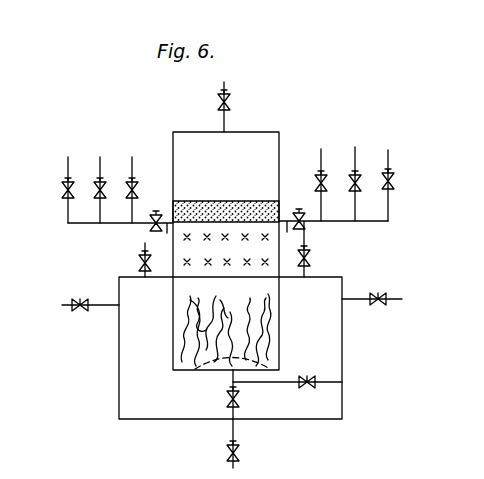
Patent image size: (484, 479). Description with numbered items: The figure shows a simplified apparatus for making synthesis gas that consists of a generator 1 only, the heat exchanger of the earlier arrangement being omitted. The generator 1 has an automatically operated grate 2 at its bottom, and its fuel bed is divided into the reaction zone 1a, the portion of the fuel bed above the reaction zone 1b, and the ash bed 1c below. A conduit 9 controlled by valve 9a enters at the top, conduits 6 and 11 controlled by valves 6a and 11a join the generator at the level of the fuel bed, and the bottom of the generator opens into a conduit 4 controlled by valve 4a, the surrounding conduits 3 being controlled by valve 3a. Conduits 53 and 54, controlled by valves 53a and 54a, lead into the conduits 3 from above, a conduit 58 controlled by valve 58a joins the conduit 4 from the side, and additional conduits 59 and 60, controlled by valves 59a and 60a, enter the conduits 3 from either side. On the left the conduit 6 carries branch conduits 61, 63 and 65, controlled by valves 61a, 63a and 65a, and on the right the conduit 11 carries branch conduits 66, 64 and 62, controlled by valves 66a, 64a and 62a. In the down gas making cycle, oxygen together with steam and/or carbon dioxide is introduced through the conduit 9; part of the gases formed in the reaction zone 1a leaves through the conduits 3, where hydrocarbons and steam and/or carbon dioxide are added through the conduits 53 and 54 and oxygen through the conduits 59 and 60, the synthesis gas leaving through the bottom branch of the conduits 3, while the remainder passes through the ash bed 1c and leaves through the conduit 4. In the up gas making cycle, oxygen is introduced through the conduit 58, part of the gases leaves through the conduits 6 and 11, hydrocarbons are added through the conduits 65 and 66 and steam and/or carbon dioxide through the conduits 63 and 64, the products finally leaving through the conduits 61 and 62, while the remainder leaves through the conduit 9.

The generator 1 is at (226, 251).
The reaction zone 1a is at (185, 263).
The portion of the fuel bed above the reaction zone 1b is at (250, 210).
The ash bed 1c is at (203, 330).
The automatically operated grate 2 is at (215, 361).
The conduit 3 is at (119, 372).
The valve 3a is at (228, 452).
The conduit 4 is at (238, 403).
The valve 4a is at (228, 401).
The conduit 6 is at (120, 241).
The valve 6a is at (158, 219).
The conduit 9 is at (222, 98).
The valve 9a is at (229, 103).
The conduit 11 is at (333, 239).
The valve 11a is at (299, 215).
The conduit 53 is at (142, 269).
The valve 53a is at (143, 261).
The conduit 54 is at (307, 267).
The valve 54a is at (308, 251).
The conduit 58 is at (318, 380).
The valve 58a is at (307, 375).
The conduit 59 is at (65, 306).
The valve 59a is at (74, 303).
The conduit 60 is at (357, 299).
The valve 60a is at (384, 294).
The conduit 61 is at (67, 211).
The valve 61a is at (65, 186).
The conduit 62 is at (389, 152).
The valve 62a is at (394, 181).
The conduit 63 is at (101, 157).
The valve 63a is at (98, 187).
The conduit 64 is at (355, 160).
The valve 64a is at (357, 185).
The conduit 65 is at (132, 157).
The valve 65a is at (134, 187).
The conduit 66 is at (321, 150).
The valve 66a is at (319, 179).